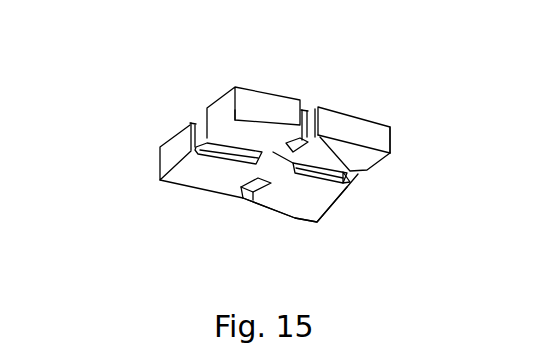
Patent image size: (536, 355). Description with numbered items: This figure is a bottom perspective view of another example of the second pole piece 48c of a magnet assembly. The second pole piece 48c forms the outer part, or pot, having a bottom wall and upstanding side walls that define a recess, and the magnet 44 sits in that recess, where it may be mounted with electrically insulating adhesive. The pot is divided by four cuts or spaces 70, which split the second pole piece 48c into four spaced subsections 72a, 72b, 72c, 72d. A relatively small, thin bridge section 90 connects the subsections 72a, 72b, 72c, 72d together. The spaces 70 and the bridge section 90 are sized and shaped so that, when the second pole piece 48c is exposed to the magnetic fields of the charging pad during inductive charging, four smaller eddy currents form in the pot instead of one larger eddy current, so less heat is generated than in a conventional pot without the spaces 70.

The magnet 44 is at (245, 190).
The second pole piece 48c is at (390, 127).
The spaces 70 is at (190, 123).
The subsection 72a is at (198, 165).
The subsection 72b is at (243, 108).
The subsection 72c is at (350, 135).
The subsection 72d is at (297, 203).
The bridge section 90 is at (337, 178).